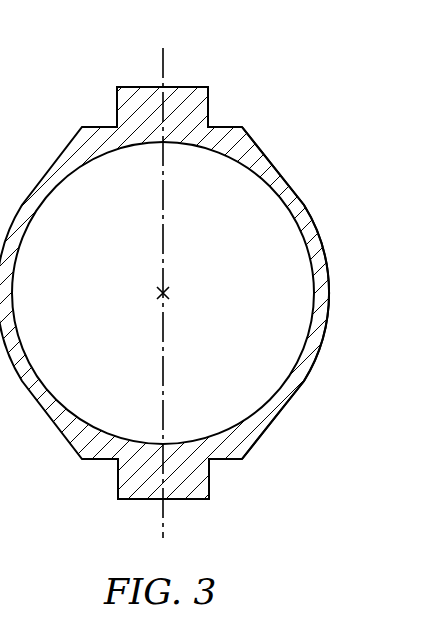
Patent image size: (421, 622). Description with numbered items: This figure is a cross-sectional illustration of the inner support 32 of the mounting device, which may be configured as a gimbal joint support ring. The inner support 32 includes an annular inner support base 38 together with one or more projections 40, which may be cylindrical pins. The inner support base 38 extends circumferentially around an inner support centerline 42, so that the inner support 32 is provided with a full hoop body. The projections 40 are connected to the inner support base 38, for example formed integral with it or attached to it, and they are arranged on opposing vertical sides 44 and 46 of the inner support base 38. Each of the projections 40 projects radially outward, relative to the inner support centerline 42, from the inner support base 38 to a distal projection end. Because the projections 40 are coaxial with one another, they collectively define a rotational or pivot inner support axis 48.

The inner support 32 is at (325, 124).
The inner support base 38 is at (330, 281).
The projections 40 is at (197, 87).
The inner support centerline 42 is at (162, 293).
The vertical side 44 is at (97, 461).
The vertical side 46 is at (97, 127).
The inner support axis 48 is at (152, 52).